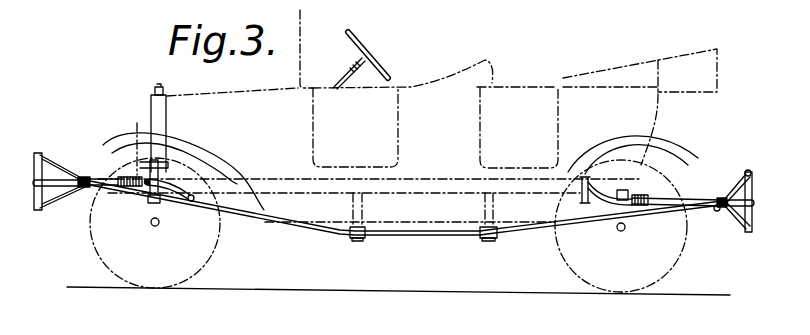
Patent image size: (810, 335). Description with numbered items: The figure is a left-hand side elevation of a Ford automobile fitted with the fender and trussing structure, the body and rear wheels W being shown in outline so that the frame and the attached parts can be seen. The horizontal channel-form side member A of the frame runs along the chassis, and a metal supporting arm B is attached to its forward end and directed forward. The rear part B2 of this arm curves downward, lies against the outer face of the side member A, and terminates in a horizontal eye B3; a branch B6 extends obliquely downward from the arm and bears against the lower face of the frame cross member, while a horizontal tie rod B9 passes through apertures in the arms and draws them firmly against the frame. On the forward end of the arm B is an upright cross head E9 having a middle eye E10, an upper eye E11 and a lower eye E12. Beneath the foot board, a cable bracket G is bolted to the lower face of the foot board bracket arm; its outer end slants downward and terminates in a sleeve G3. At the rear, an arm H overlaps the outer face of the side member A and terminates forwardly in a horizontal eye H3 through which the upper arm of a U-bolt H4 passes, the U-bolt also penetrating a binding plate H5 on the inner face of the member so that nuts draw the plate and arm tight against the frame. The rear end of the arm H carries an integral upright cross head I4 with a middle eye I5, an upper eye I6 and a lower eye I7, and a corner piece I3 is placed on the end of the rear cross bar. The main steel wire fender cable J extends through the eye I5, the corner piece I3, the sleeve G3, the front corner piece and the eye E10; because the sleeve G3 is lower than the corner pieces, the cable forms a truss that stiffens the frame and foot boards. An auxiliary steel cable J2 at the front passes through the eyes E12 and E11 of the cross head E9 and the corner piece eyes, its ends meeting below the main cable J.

The frame side member A is at (430, 194).
The rear wheel W is at (218, 242).
The supporting arm B is at (112, 189).
The rear part of supporting arm B2 is at (172, 168).
The horizontal eye B3 is at (189, 201).
The branch B6 is at (148, 200).
The tie rod B9 is at (130, 172).
The cross head E9 is at (103, 187).
The aperture or eye E10 is at (33, 183).
The aperture or eye E11 is at (38, 154).
The aperture or eye E12 is at (58, 205).
The auxiliary steel cable J2 is at (47, 165).
The main fender cable J is at (410, 236).
The cable bracket G is at (347, 233).
The sleeve G3 is at (357, 240).
The arm H is at (682, 198).
The horizontal eye H3 is at (583, 177).
The U-bolt H4 is at (562, 192).
The binding plate H5 is at (594, 201).
The corner piece I3 is at (720, 198).
The cross head I4 is at (752, 184).
The aperture or eye I5 is at (753, 205).
The aperture or eye I6 is at (748, 174).
The aperture or eye I7 is at (749, 230).